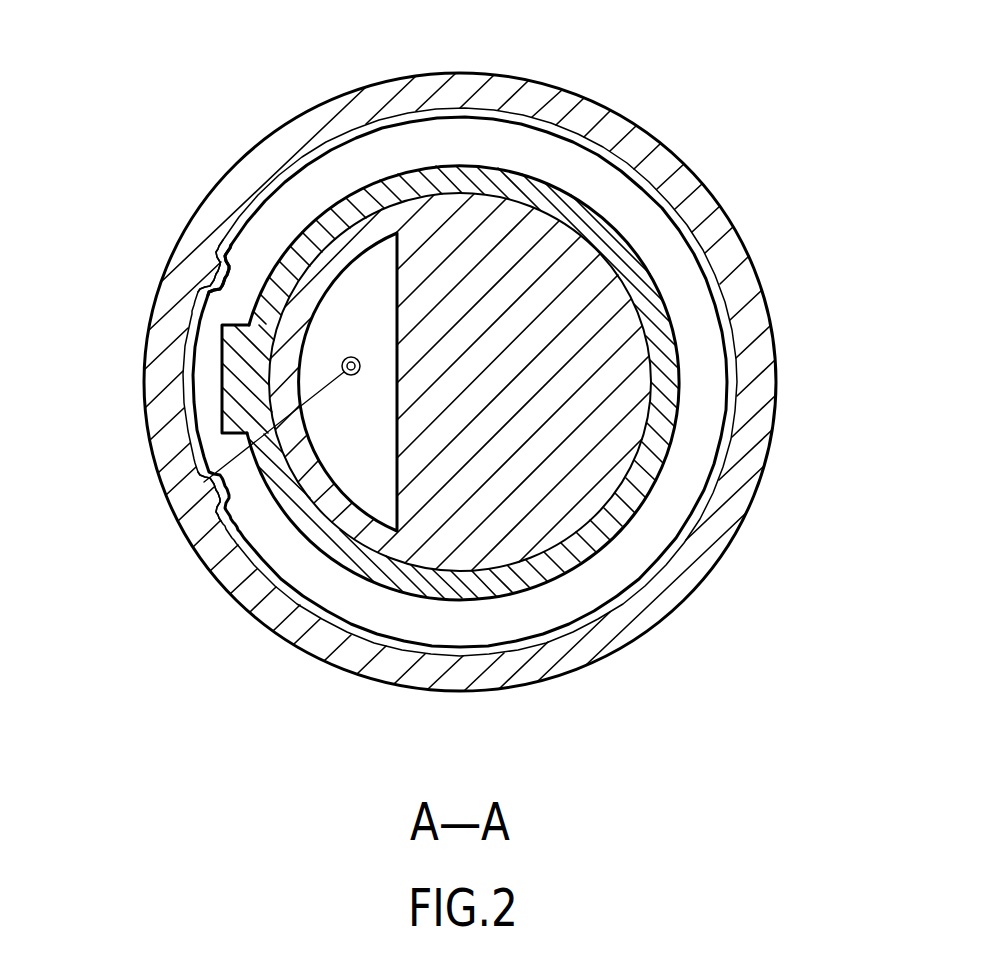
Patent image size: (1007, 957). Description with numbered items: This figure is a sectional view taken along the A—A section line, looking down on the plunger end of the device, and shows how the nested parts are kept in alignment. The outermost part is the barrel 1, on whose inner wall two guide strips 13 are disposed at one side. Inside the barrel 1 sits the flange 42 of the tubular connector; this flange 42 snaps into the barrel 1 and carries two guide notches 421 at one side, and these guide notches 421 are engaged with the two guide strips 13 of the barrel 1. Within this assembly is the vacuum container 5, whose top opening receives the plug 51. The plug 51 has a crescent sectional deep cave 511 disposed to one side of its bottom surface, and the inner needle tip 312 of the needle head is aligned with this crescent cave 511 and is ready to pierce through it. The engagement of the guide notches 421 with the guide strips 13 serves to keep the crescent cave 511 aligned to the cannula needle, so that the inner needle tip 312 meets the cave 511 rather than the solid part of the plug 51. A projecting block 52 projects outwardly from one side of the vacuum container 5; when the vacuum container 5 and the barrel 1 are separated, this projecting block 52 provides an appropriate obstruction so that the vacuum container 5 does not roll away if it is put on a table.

The barrel 1 is at (367, 105).
The guide strips 13 is at (212, 267).
The flange 42 is at (293, 197).
The guide notches 421 is at (227, 250).
The vacuum container 5 is at (547, 187).
The plug 51 is at (582, 477).
The crescent sectional deep cave 511 is at (357, 451).
The projecting block 52 is at (230, 377).
The inner needle tip 312 is at (215, 480).